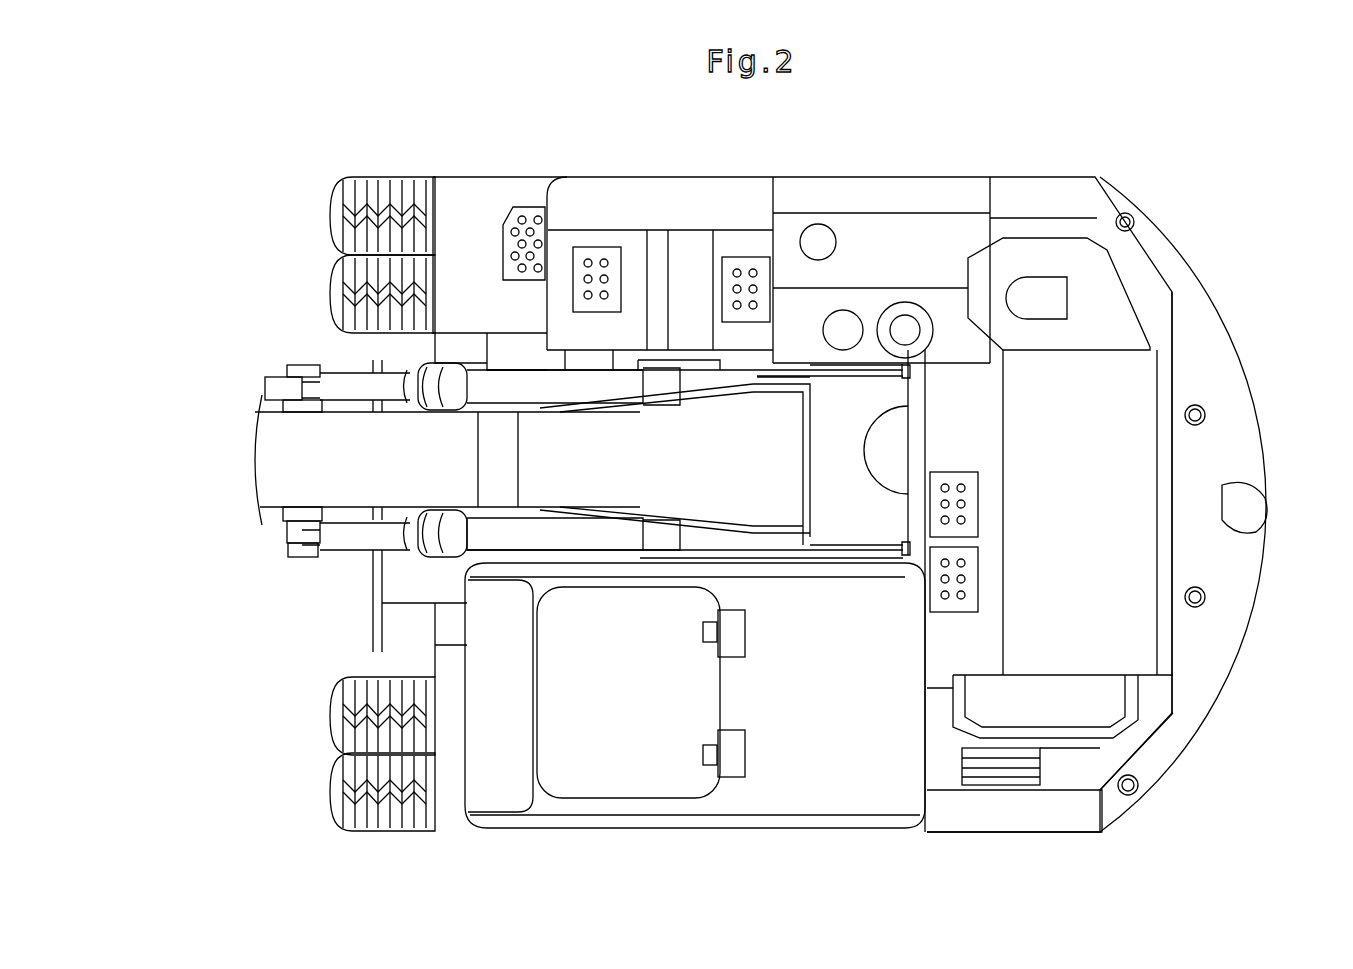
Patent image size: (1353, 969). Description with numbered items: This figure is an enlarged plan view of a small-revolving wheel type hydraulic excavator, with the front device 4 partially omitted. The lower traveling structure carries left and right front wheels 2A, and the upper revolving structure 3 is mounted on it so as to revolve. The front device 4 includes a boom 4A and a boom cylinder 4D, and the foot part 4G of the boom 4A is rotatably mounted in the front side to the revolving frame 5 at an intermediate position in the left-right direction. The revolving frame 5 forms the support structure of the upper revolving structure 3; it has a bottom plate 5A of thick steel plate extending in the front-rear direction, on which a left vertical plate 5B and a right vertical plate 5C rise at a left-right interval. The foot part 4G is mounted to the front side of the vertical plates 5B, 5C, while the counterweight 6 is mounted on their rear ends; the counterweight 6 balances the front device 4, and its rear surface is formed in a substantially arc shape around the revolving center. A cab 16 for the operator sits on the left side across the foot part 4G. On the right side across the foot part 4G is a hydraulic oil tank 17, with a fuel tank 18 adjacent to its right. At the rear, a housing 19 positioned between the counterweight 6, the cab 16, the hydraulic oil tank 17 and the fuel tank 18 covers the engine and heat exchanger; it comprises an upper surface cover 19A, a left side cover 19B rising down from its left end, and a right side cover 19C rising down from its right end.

The front wheels 2A is at (390, 205).
The upper revolving structure 3 is at (662, 172).
The front device 4 is at (290, 466).
The boom 4A is at (337, 480).
The boom cylinder 4D is at (353, 387).
The foot part 4G is at (773, 472).
The revolving frame 5 is at (883, 513).
The bottom plate 5A is at (847, 433).
The left vertical plate 5B is at (853, 547).
The right vertical plate 5C is at (846, 375).
The counterweight 6 is at (1220, 438).
The cab 16 is at (820, 763).
The hydraulic oil tank 17 is at (950, 323).
The fuel tank 18 is at (877, 243).
The housing 19 is at (1100, 757).
The upper surface cover 19A is at (1067, 767).
The left side cover 19B is at (978, 810).
The right side cover 19C is at (1040, 205).